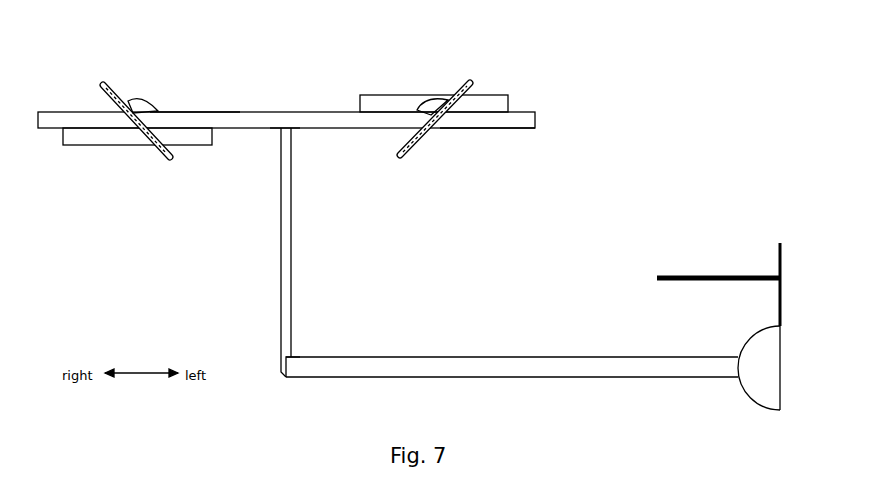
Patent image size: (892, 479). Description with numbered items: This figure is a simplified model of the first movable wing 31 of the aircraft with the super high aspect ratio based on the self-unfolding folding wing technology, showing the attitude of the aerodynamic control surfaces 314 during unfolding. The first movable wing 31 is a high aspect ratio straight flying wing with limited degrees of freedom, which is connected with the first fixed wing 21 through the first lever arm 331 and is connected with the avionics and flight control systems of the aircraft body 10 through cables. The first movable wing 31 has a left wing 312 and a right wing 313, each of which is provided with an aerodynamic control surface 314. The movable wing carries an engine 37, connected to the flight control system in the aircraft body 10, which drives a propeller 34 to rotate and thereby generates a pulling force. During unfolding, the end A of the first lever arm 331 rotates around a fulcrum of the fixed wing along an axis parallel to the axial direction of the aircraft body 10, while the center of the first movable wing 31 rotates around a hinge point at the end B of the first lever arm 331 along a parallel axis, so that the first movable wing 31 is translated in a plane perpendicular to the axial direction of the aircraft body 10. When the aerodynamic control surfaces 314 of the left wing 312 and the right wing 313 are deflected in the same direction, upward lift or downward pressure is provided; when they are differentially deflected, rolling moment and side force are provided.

The aircraft body 10 is at (762, 370).
The first fixed wing 21 is at (497, 368).
The first movable wing 31 is at (297, 86).
The left wing 312 is at (478, 130).
The right wing 313 is at (197, 116).
The aerodynamic control surface 314 is at (92, 138).
The first lever arm 331 is at (282, 240).
The propeller 34 is at (150, 146).
The engine 37 is at (130, 100).
The end A of the first lever arm A is at (292, 360).
The end B of the first lever arm B is at (278, 132).